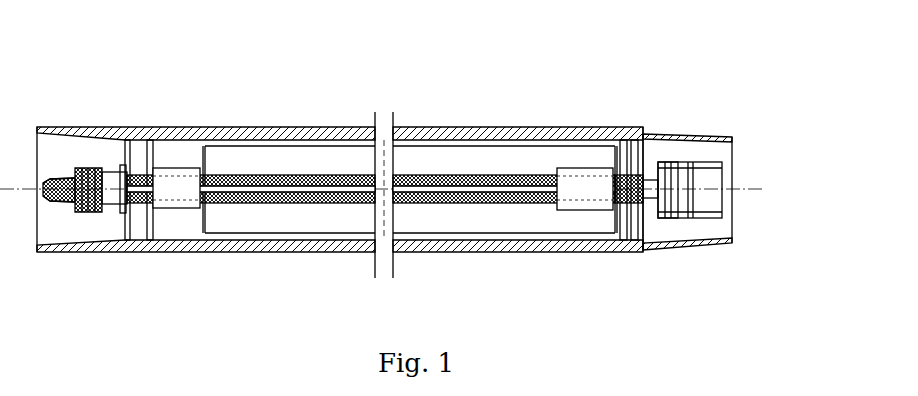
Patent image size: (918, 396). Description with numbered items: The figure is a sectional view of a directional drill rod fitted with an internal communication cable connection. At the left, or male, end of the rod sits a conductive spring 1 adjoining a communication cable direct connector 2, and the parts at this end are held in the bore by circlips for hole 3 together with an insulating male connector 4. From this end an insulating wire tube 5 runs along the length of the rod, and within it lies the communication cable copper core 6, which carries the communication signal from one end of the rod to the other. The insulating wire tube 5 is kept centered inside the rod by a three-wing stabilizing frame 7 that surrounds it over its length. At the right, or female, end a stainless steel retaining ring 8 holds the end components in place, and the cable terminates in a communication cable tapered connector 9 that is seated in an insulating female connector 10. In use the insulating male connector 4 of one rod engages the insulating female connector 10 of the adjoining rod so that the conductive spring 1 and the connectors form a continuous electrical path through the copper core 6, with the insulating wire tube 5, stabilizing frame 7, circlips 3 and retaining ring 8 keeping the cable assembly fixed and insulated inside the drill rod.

The conductive spring 1 is at (177, 312).
The communication cable direct connector 2 is at (177, 68).
The circlips for hole 3 is at (255, 68).
The insulating male connector 4 is at (302, 312).
The insulating wire tube 5 is at (402, 69).
The communication cable copper core 6 is at (523, 69).
The three-wing stabilizing frame 7 is at (572, 312).
The stainless steel retaining ring 8 is at (712, 69).
The communication cable tapered connector 9 is at (773, 293).
The insulating female connector 10 is at (830, 69).